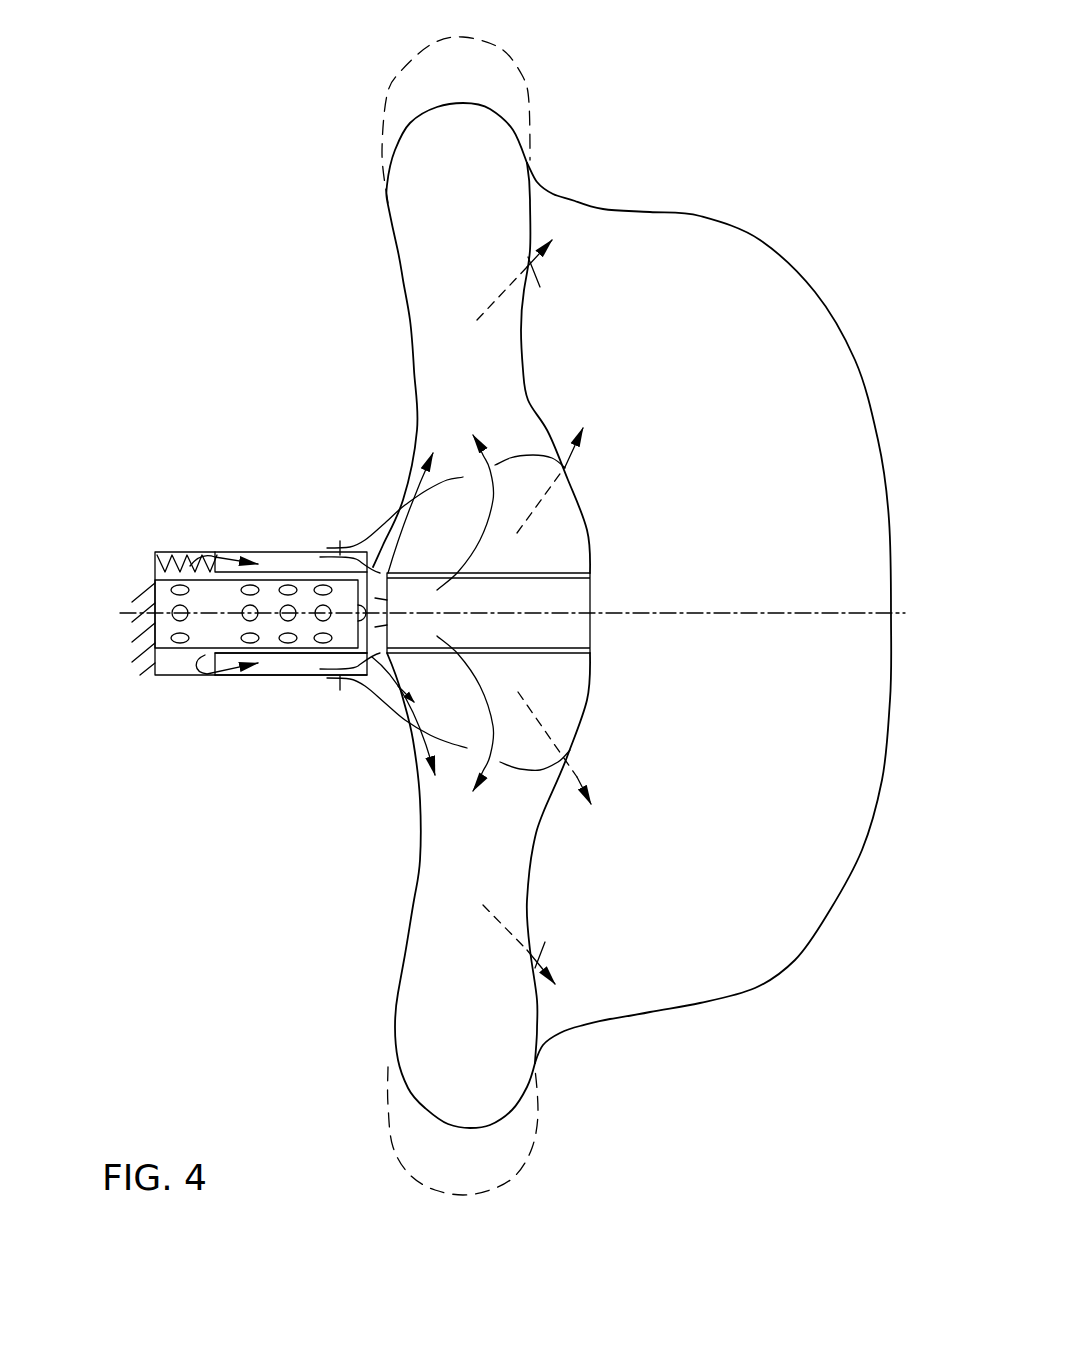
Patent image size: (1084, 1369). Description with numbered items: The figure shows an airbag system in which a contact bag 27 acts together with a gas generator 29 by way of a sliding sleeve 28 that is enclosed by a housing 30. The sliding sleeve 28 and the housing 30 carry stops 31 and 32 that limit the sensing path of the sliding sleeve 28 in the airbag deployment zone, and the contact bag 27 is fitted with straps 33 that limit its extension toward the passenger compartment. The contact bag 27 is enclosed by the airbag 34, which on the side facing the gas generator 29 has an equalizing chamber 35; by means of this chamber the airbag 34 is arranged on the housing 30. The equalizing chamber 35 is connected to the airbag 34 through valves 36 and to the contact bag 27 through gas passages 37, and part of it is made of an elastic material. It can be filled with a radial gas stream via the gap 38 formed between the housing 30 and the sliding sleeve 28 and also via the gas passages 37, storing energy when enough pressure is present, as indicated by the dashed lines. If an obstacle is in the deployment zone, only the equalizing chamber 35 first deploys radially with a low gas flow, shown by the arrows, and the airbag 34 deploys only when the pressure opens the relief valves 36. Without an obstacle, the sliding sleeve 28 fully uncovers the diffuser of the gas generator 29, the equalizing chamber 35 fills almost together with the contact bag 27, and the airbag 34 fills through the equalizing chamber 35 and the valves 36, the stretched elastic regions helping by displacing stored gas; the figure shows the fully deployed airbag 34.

The contact bag 27 is at (412, 701).
The sliding sleeve 28 is at (272, 653).
The gas generator 29 is at (197, 597).
The housing 30 is at (265, 553).
The stop 31 is at (213, 663).
The stop 32 is at (367, 570).
The straps 33 is at (535, 573).
The airbag 34 is at (731, 736).
The equalizing chamber 35 is at (435, 897).
The valves 36 is at (542, 950).
The gas passages 37 is at (495, 465).
The gap 38 is at (303, 562).